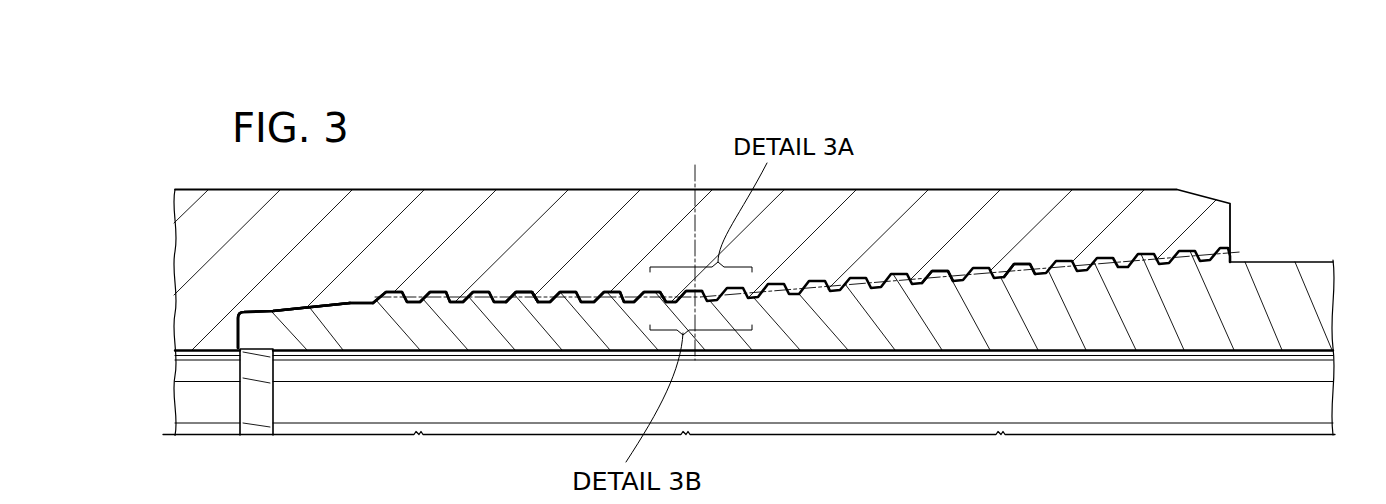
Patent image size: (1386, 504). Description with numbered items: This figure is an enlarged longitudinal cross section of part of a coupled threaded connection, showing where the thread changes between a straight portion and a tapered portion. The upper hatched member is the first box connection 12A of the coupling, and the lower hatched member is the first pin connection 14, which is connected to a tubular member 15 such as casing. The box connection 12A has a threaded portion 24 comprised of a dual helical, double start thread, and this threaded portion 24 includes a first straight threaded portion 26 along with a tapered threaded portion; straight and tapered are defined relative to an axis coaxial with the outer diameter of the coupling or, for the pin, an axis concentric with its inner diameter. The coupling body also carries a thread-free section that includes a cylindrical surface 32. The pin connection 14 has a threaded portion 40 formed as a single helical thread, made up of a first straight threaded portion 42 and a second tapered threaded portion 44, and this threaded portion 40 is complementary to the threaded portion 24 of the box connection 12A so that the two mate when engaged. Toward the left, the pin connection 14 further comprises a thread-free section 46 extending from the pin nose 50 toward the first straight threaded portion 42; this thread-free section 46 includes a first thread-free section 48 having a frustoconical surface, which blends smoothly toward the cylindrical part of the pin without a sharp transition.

The first box connection 12A is at (579, 139).
The first pin connection 14 is at (849, 376).
The tubular member 15 is at (1297, 262).
The threaded portion 24 is at (965, 268).
The first straight threaded portion 26 is at (500, 296).
The cylindrical surface 32 is at (355, 304).
The threaded portion 40 is at (941, 273).
The first straight threaded portion 42 is at (525, 293).
The second tapered threaded portion 44 is at (1020, 271).
The thread-free section 46 is at (333, 304).
The first thread-free section 48 is at (305, 304).
The pin nose 50 is at (240, 337).